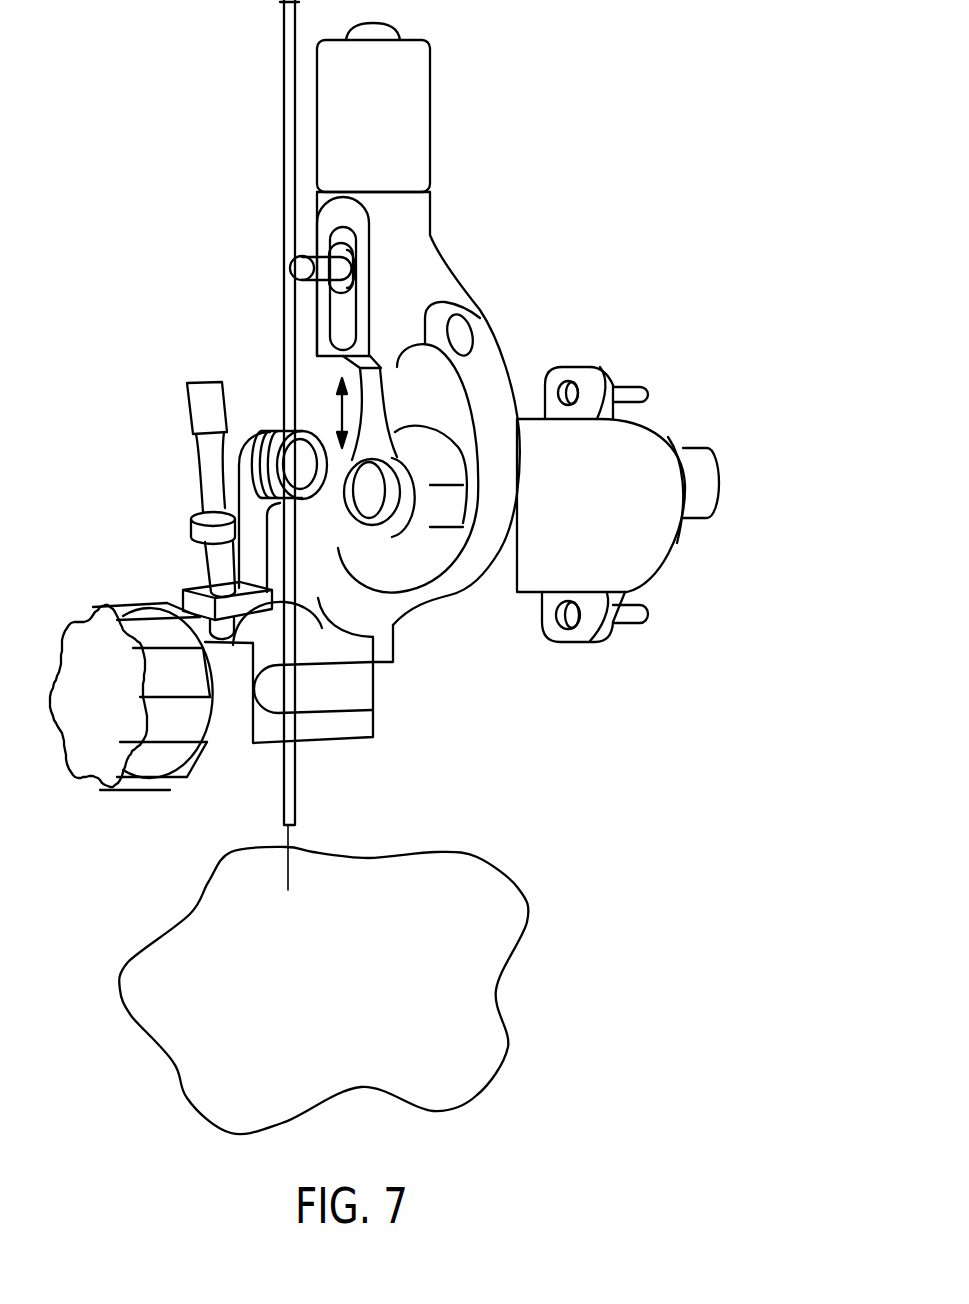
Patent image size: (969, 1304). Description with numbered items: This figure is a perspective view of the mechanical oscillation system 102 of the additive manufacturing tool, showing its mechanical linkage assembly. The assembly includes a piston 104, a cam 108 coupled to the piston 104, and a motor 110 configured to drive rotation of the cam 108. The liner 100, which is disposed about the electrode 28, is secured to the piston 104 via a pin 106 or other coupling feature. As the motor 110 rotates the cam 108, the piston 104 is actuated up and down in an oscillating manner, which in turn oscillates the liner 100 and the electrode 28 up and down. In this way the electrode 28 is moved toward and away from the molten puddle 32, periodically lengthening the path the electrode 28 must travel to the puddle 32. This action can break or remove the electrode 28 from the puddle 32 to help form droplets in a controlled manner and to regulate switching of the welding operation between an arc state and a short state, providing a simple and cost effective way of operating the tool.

The electrode 28 is at (287, 872).
The molten puddle 32 is at (512, 887).
The liner 100 is at (290, 108).
The mechanical oscillation system 102 is at (525, 172).
The piston 104 is at (367, 447).
The pin 106 is at (320, 272).
The cam 108 is at (398, 527).
The motor 110 is at (615, 485).